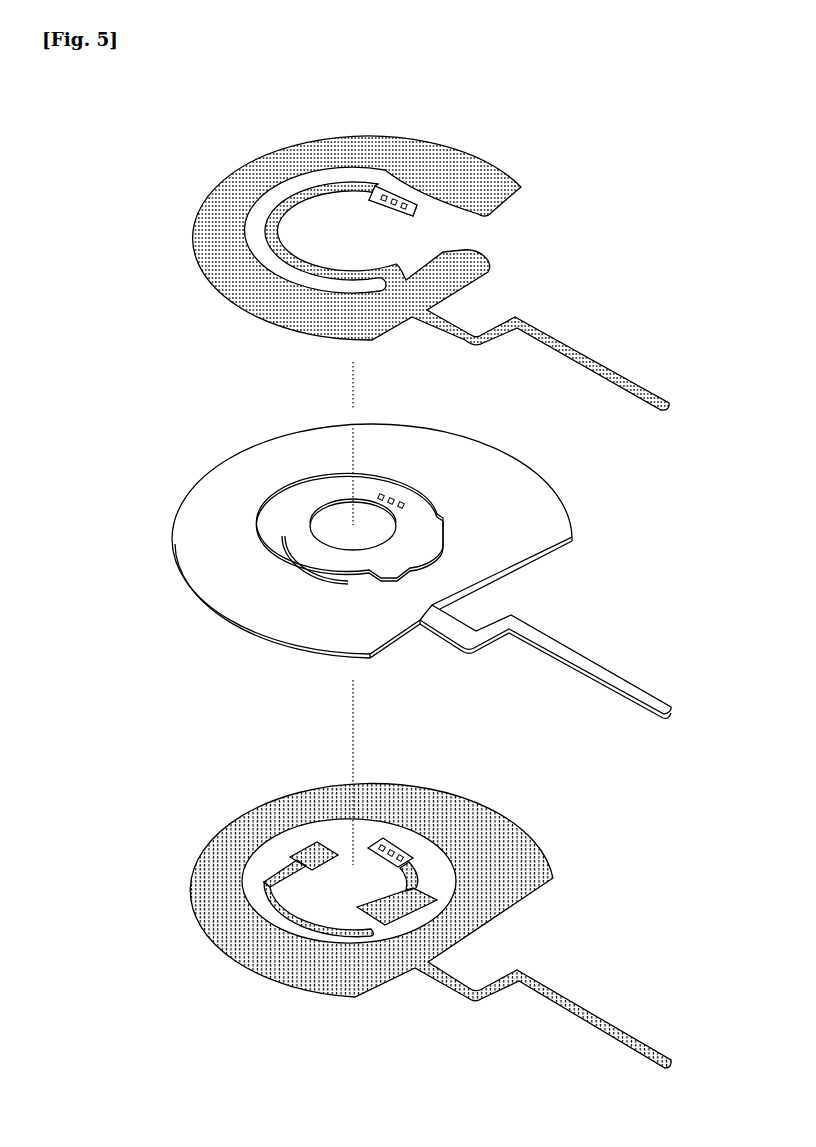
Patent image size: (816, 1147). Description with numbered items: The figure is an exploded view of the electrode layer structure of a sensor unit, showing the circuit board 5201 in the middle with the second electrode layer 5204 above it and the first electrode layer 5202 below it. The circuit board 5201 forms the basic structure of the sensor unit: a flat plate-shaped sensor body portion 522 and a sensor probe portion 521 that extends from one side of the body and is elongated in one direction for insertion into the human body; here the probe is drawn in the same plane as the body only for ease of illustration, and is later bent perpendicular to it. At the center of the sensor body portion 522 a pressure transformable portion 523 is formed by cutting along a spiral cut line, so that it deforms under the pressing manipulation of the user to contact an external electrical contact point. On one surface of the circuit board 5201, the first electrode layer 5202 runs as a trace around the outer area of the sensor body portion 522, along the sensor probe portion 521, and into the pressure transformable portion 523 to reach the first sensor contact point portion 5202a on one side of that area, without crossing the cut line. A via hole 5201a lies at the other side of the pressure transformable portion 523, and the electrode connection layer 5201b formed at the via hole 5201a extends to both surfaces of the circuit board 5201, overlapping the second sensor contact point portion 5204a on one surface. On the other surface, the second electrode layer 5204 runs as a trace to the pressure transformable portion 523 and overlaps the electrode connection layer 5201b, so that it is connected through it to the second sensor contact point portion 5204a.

The circuit board 5201 is at (186, 404).
The second electrode layer 5204 is at (306, 154).
The electrode connection layer 5201b is at (392, 190).
The via hole 5201a is at (393, 495).
The pressure transformable portion 523 is at (421, 527).
The sensor body portion 522 is at (190, 540).
The sensor probe portion 521 is at (560, 632).
The first electrode layer 5202 is at (505, 850).
The first sensor contact point portion 5202a is at (307, 845).
The second sensor contact point portion 5204a is at (425, 904).